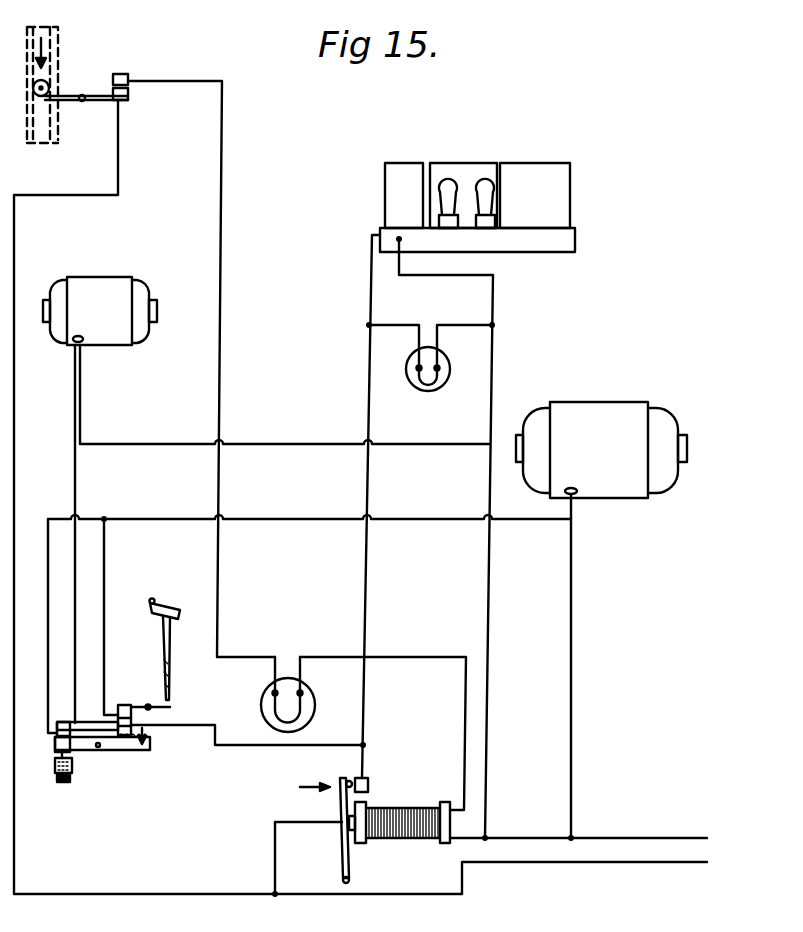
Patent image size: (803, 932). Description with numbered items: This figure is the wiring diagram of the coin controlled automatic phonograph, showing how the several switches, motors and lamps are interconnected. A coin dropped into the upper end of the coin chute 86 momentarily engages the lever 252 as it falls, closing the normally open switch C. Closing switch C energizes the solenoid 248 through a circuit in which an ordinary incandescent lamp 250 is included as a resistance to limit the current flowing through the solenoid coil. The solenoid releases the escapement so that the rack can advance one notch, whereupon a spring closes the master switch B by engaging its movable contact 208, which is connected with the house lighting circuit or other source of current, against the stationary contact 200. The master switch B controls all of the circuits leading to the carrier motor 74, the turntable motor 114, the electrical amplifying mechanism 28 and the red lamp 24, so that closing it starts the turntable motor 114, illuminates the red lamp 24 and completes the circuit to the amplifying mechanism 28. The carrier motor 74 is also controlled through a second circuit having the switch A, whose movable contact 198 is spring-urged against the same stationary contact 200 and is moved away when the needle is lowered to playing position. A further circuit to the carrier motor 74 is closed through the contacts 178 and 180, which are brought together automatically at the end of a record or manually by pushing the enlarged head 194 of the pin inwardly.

The coin chute 86 is at (58, 62).
The lever 252 is at (76, 101).
The switch C is at (130, 90).
The electrical amplifying mechanism 28 is at (540, 180).
The turntable motor 114 is at (118, 340).
The carrier motor 74 is at (603, 418).
The red lamp 24 is at (438, 391).
The incandescent lamp 250 is at (289, 688).
The movable contact 198 is at (130, 720).
The switch A is at (133, 705).
The electrical contact 178 is at (57, 733).
The electrical contact 180 is at (76, 750).
The enlarged head 194 is at (66, 783).
The stationary contact 200 is at (143, 742).
The movable contact 208 is at (340, 778).
The master switch B is at (340, 803).
The solenoid 248 is at (418, 838).